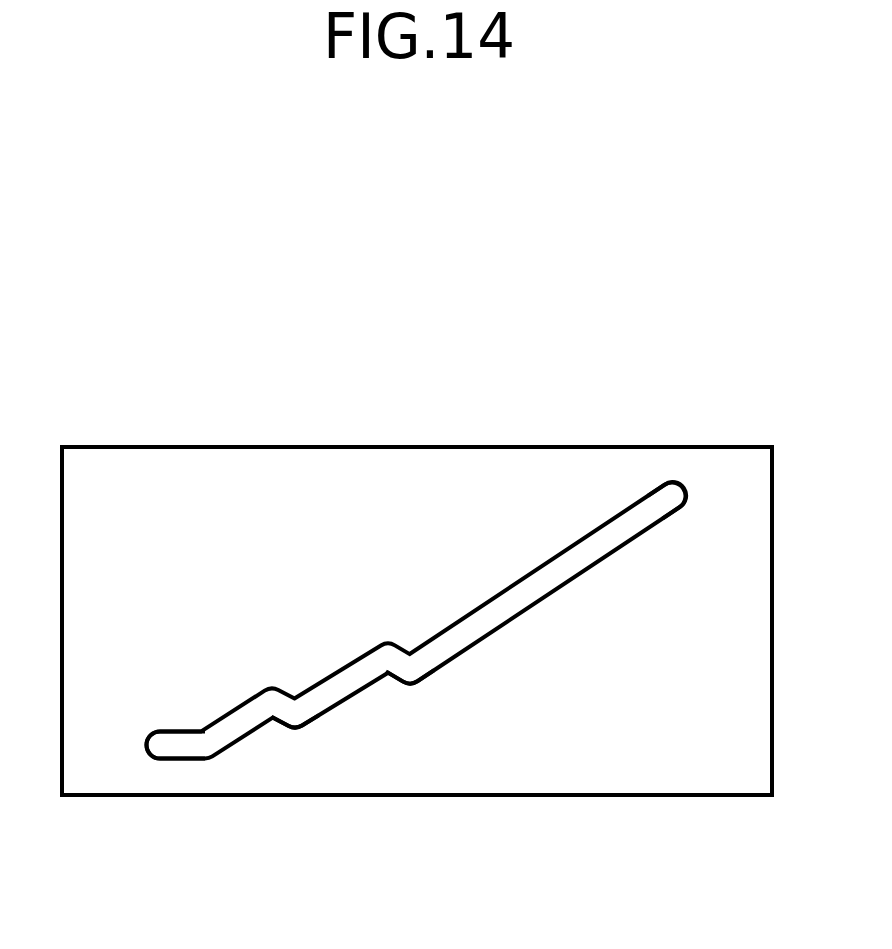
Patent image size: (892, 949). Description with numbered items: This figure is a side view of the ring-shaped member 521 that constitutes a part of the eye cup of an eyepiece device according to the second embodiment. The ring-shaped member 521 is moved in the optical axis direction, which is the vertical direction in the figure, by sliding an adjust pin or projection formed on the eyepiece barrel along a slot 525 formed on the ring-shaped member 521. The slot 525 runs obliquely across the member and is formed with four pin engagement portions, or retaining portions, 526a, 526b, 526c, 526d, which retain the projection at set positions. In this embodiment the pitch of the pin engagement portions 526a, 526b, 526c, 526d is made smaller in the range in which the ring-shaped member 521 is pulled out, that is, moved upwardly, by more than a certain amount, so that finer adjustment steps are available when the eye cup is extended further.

The ring-shaped member 521 is at (161, 447).
The slot 525 is at (635, 533).
The pin engagement portion 526a is at (660, 497).
The pin engagement portion 526b is at (405, 667).
The pin engagement portion 526c is at (283, 707).
The pin engagement portion 526d is at (200, 747).